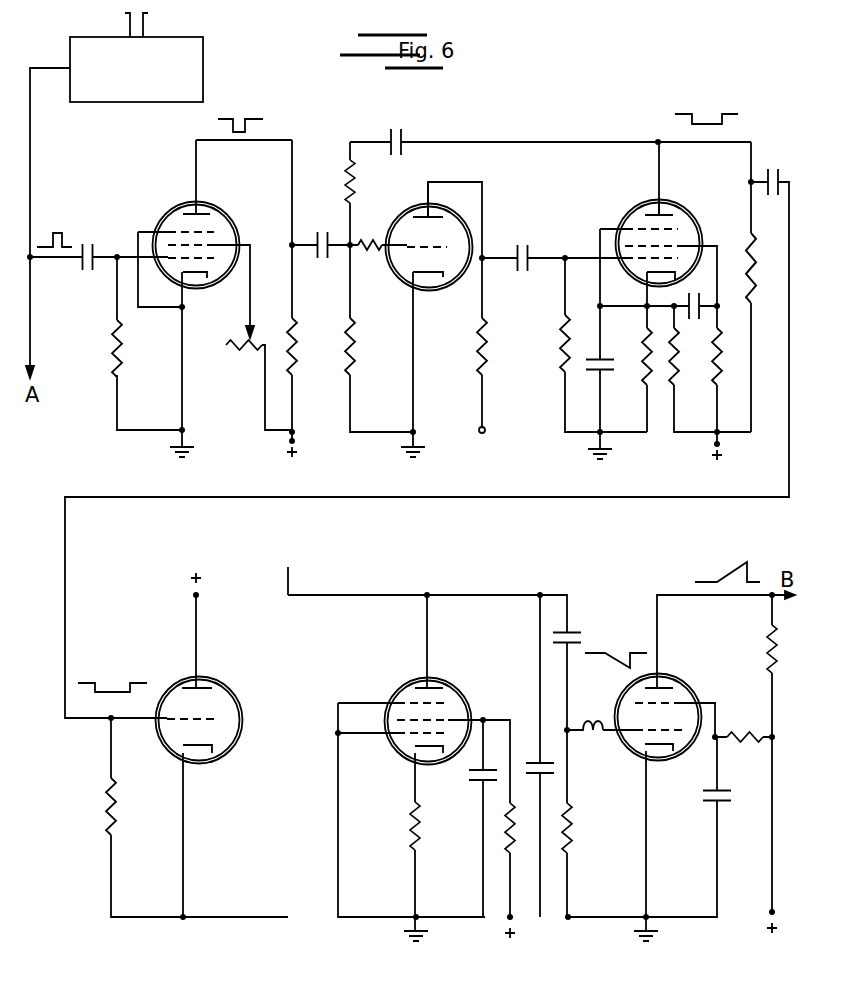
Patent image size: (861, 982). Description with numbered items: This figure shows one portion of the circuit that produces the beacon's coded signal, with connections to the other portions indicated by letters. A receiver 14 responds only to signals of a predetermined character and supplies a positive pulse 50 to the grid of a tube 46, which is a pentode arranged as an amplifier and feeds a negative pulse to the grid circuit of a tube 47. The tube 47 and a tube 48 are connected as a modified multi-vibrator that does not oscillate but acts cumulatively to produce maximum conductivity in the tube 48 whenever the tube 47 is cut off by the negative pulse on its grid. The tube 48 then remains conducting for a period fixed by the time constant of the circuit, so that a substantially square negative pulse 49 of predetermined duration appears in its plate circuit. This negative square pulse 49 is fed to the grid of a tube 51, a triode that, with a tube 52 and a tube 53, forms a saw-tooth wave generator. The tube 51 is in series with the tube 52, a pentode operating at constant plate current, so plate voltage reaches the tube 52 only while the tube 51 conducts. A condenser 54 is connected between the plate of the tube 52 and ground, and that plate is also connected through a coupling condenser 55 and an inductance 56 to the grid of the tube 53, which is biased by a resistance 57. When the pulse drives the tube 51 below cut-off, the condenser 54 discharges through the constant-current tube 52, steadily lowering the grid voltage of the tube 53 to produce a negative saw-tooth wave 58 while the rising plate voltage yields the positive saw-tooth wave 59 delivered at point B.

The receiver 14 is at (190, 70).
The tube 46 is at (220, 209).
The tube 47 is at (407, 207).
The tube 48 is at (636, 208).
The negative square pulse 49 is at (108, 688).
The positive pulse 50 is at (63, 232).
The tube 51 is at (240, 703).
The tube 52 is at (455, 685).
The tube 53 is at (682, 682).
The condenser 54 is at (538, 761).
The coupling condenser 55 is at (575, 630).
The inductance 56 is at (597, 743).
The resistance 57 is at (578, 835).
The negative saw-tooth wave 58 is at (612, 652).
The positive saw-tooth wave 59 is at (727, 576).